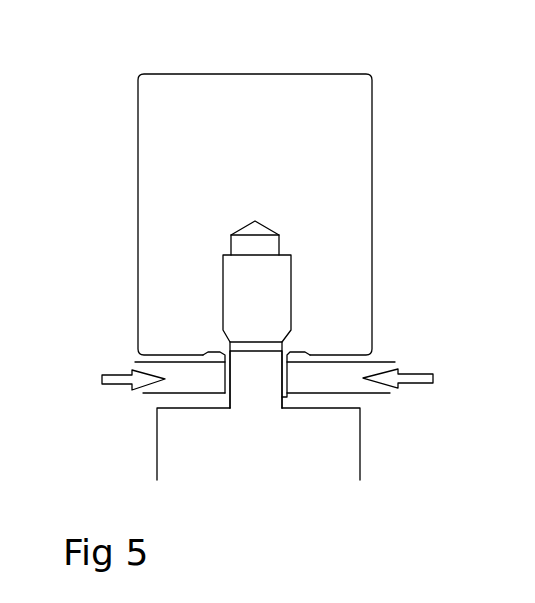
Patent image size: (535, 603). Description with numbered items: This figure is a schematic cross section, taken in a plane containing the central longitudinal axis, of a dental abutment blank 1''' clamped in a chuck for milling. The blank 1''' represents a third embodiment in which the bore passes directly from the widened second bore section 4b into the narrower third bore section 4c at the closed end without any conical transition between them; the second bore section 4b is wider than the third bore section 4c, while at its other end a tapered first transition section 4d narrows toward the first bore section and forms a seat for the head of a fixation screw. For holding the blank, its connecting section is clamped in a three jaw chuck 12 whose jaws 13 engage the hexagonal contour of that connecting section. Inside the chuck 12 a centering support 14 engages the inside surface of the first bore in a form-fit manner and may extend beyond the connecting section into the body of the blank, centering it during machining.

The abutment blank 1''' is at (290, 198).
The third bore section 4c is at (280, 243).
The second bore section 4b is at (286, 296).
The first transition section 4d is at (283, 338).
The jaws 13 is at (153, 395).
The centering support 14 is at (242, 385).
The three jaw chuck 12 is at (338, 450).